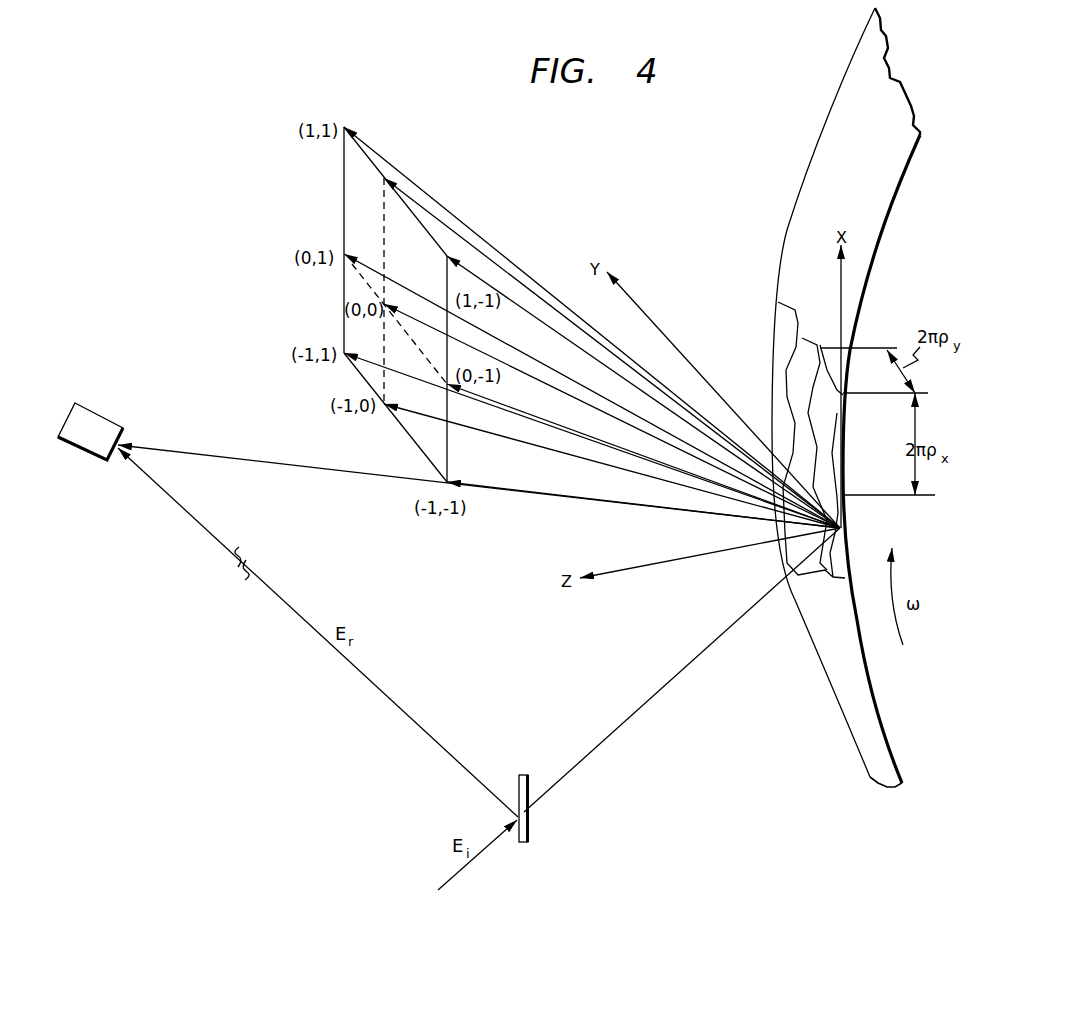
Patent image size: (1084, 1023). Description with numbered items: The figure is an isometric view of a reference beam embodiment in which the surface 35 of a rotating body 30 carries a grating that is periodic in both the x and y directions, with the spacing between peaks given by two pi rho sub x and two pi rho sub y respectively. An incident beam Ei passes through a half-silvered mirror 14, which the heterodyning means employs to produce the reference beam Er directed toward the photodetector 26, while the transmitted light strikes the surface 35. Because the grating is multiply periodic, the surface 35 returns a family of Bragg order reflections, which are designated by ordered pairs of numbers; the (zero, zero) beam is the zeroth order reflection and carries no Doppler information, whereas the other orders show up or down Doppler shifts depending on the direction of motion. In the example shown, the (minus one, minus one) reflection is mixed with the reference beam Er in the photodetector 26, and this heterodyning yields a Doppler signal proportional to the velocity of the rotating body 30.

The half-silvered mirror 14 is at (530, 822).
The photodetector 26 is at (108, 415).
The rotating body 30 is at (923, 289).
The surface 35 is at (783, 395).